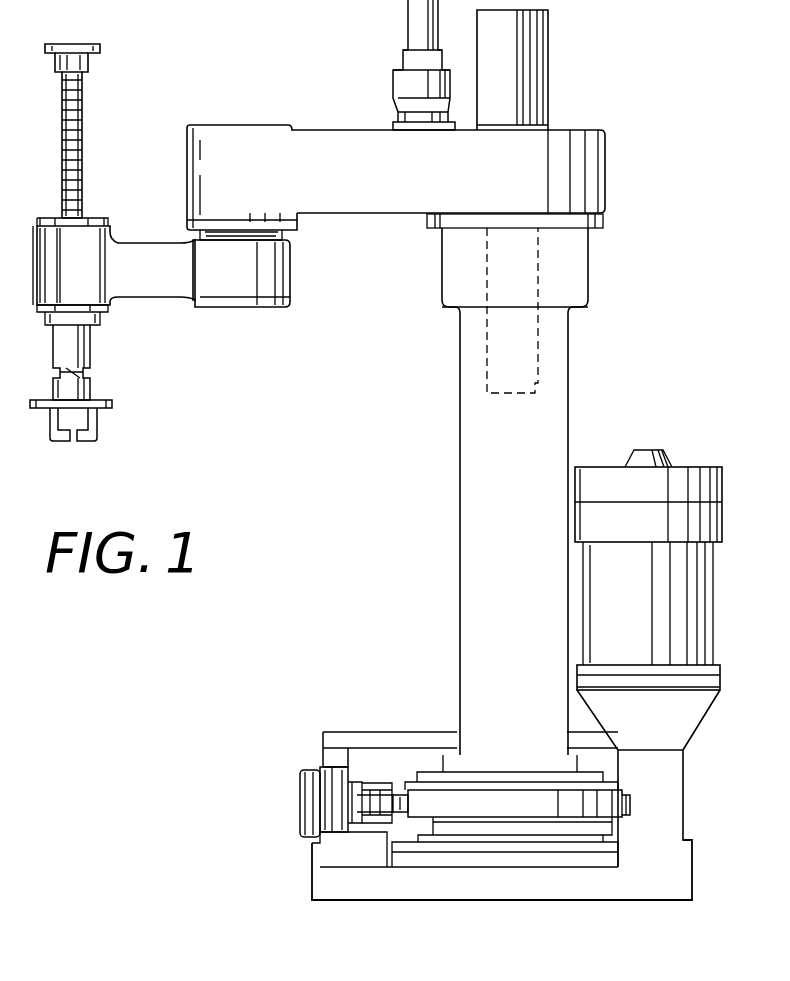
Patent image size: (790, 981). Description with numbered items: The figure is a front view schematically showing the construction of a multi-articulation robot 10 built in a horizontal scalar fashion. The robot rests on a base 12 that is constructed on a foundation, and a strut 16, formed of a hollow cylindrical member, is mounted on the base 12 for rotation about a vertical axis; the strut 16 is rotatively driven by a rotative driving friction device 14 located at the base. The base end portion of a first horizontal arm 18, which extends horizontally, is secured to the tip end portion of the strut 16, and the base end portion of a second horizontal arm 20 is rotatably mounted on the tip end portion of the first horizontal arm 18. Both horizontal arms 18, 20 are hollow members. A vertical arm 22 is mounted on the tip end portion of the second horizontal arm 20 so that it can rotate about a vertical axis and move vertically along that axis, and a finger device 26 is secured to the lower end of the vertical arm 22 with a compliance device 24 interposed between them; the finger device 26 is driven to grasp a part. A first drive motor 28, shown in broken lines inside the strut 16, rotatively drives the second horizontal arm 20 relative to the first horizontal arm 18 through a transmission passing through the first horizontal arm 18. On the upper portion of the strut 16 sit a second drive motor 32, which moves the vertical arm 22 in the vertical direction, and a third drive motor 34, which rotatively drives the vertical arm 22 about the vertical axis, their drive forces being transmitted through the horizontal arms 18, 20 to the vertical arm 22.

The multi-articulation robot 10 is at (608, 131).
The base 12 is at (578, 888).
The rotative driving friction device 14 is at (293, 771).
The strut 16 is at (460, 468).
The first horizontal arm 18 is at (363, 205).
The second horizontal arm 20 is at (153, 285).
The vertical arm 22 is at (82, 162).
The compliance device 24 is at (110, 404).
The finger device 26 is at (97, 438).
The first drive motor 28 is at (538, 383).
The second drive motor 32 is at (548, 45).
The third drive motor 34 is at (412, 32).